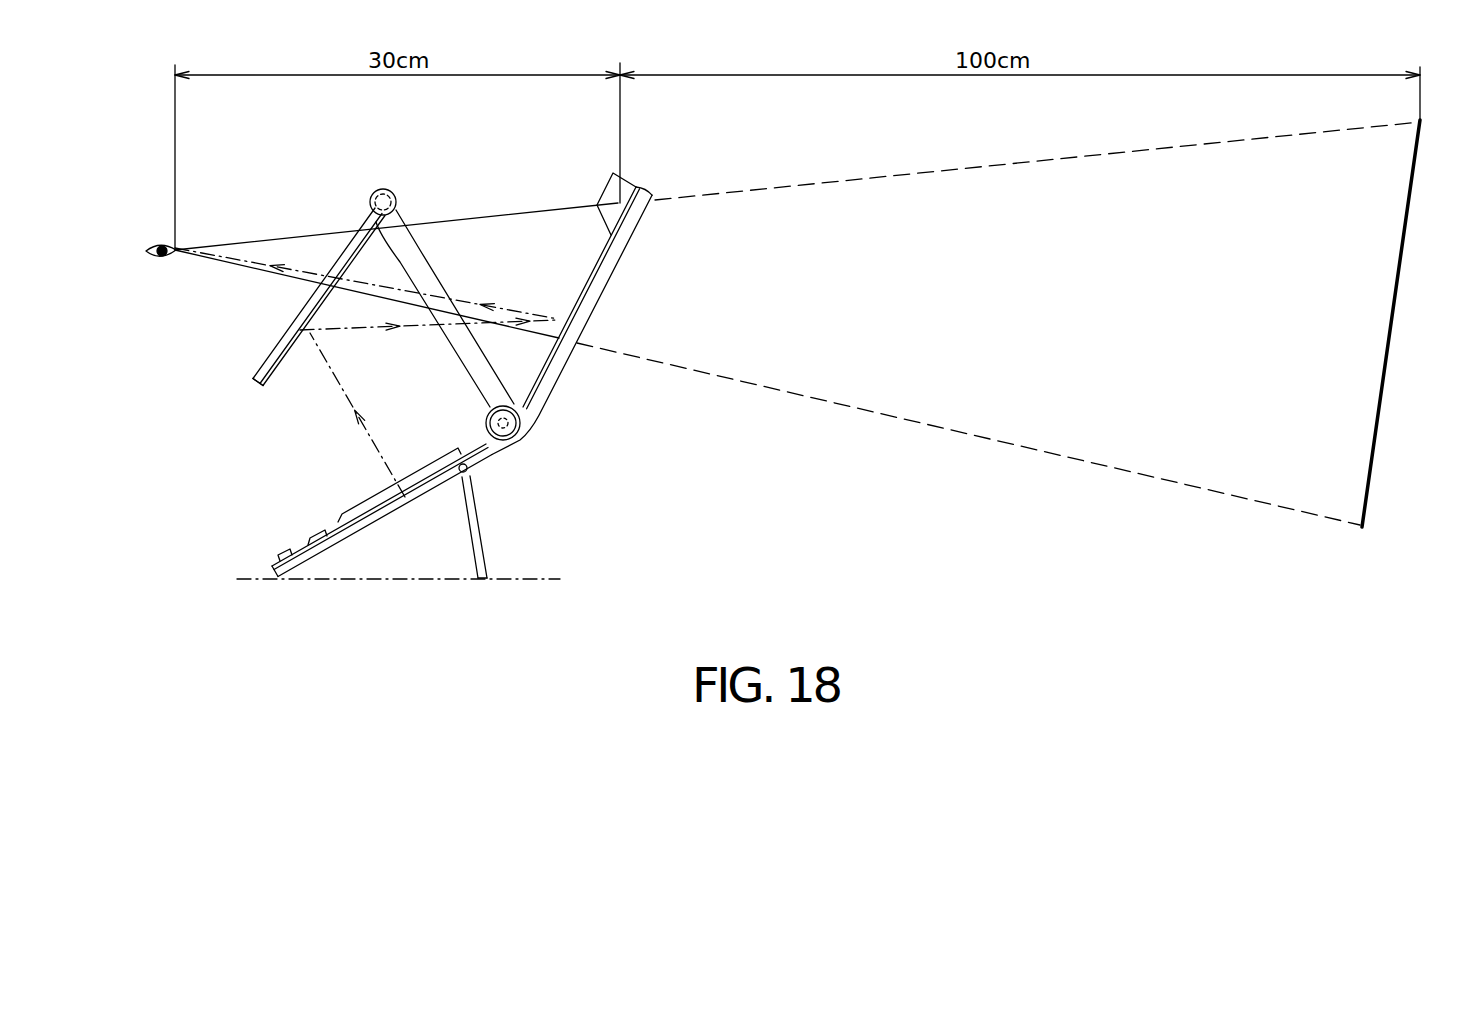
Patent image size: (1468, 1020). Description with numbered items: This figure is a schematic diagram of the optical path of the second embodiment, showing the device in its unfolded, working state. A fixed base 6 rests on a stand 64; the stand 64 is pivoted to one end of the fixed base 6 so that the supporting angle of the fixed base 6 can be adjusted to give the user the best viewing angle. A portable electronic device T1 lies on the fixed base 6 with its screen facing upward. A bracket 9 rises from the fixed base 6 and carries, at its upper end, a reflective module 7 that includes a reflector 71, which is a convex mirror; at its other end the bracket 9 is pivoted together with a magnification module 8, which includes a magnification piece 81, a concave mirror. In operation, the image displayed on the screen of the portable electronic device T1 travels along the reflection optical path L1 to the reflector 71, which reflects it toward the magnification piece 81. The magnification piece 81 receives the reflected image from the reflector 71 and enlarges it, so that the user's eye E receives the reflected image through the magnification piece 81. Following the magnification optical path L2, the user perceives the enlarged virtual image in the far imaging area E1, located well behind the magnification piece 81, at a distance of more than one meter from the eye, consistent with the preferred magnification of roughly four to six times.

The fixed base 6 is at (410, 513).
The stand 64 is at (478, 543).
The reflective module 7 is at (287, 330).
The reflector 71 is at (303, 347).
The magnification module 8 is at (620, 262).
The magnification piece 81 is at (575, 310).
The bracket 9 is at (440, 288).
The user's eye E is at (153, 256).
The far imaging area E1 is at (1382, 385).
The reflection optical path L1 is at (367, 328).
The magnification optical path L2 is at (865, 178).
The portable electronic device T1 is at (365, 495).